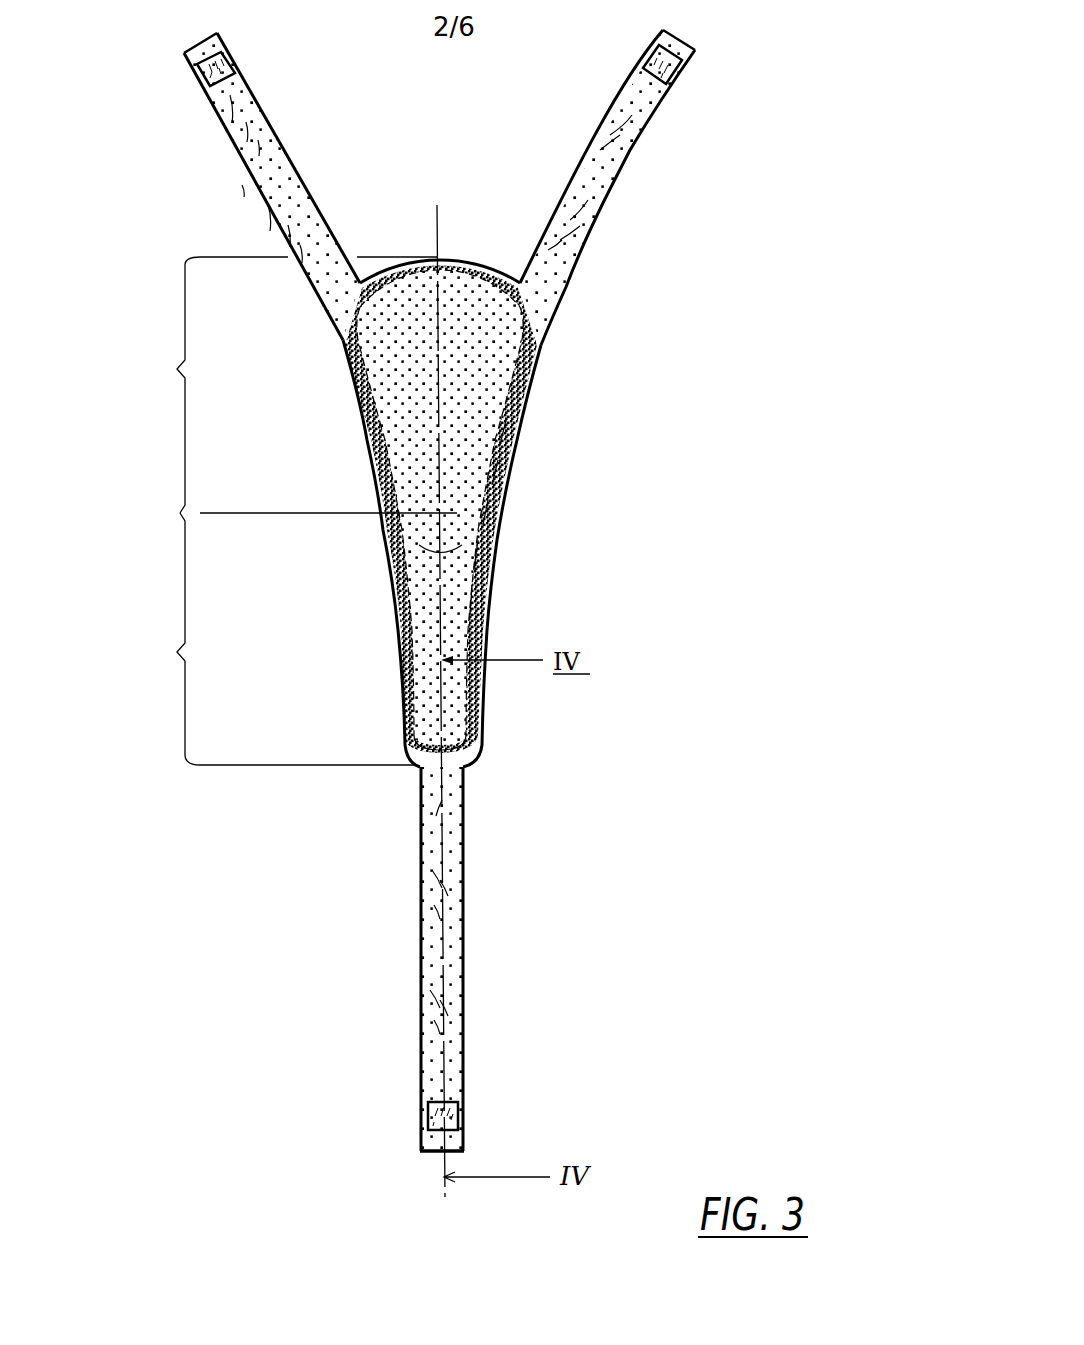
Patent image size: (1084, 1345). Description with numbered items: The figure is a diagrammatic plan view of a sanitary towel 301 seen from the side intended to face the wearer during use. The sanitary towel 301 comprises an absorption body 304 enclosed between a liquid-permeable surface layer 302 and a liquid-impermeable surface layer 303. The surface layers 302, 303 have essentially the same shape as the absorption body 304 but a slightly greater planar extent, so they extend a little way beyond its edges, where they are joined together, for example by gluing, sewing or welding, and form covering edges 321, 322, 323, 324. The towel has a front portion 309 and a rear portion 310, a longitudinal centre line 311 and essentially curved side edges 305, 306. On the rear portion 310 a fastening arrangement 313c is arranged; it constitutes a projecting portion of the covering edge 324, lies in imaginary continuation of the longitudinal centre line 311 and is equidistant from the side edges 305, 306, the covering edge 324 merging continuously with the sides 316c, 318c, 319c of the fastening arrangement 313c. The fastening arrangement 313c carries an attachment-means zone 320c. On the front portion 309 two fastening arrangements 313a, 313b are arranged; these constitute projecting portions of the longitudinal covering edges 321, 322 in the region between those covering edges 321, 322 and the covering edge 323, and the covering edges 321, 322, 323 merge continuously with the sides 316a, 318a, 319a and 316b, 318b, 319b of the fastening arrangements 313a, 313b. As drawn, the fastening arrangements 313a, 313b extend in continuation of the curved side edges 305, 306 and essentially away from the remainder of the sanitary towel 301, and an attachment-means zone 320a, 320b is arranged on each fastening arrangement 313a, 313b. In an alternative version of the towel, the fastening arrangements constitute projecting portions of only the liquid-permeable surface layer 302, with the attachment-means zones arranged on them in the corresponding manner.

The sanitary towel 301 is at (772, 33).
The liquid-permeable surface layer 302 is at (482, 393).
The liquid-impermeable surface layer 303 is at (497, 415).
The absorption body 304 is at (458, 545).
The side edge 305 is at (524, 462).
The side edge 306 is at (360, 458).
The front portion 309 is at (170, 373).
The rear portion 310 is at (170, 659).
The longitudinal centre line 311 is at (436, 235).
The fastening arrangement 313a is at (645, 158).
The fastening arrangement 313b is at (220, 128).
The fastening arrangement 313c is at (478, 890).
The side of fastening arrangement 316a is at (690, 44).
The side of fastening arrangement 316b is at (200, 45).
The side of fastening arrangement 316c is at (435, 1152).
The side of fastening arrangement 318a is at (605, 202).
The side of fastening arrangement 318b is at (270, 122).
The side of fastening arrangement 318c is at (464, 942).
The side of fastening arrangement 319a is at (593, 138).
The side of fastening arrangement 319b is at (252, 174).
The side of fastening arrangement 319c is at (423, 942).
The attachment-means zone 320a is at (680, 72).
The attachment-means zone 320b is at (205, 75).
The attachment-means zone 320c is at (459, 1112).
The covering edge 321 is at (493, 513).
The covering edge 322 is at (362, 423).
The covering edge 323 is at (474, 263).
The covering edge 324 is at (407, 749).